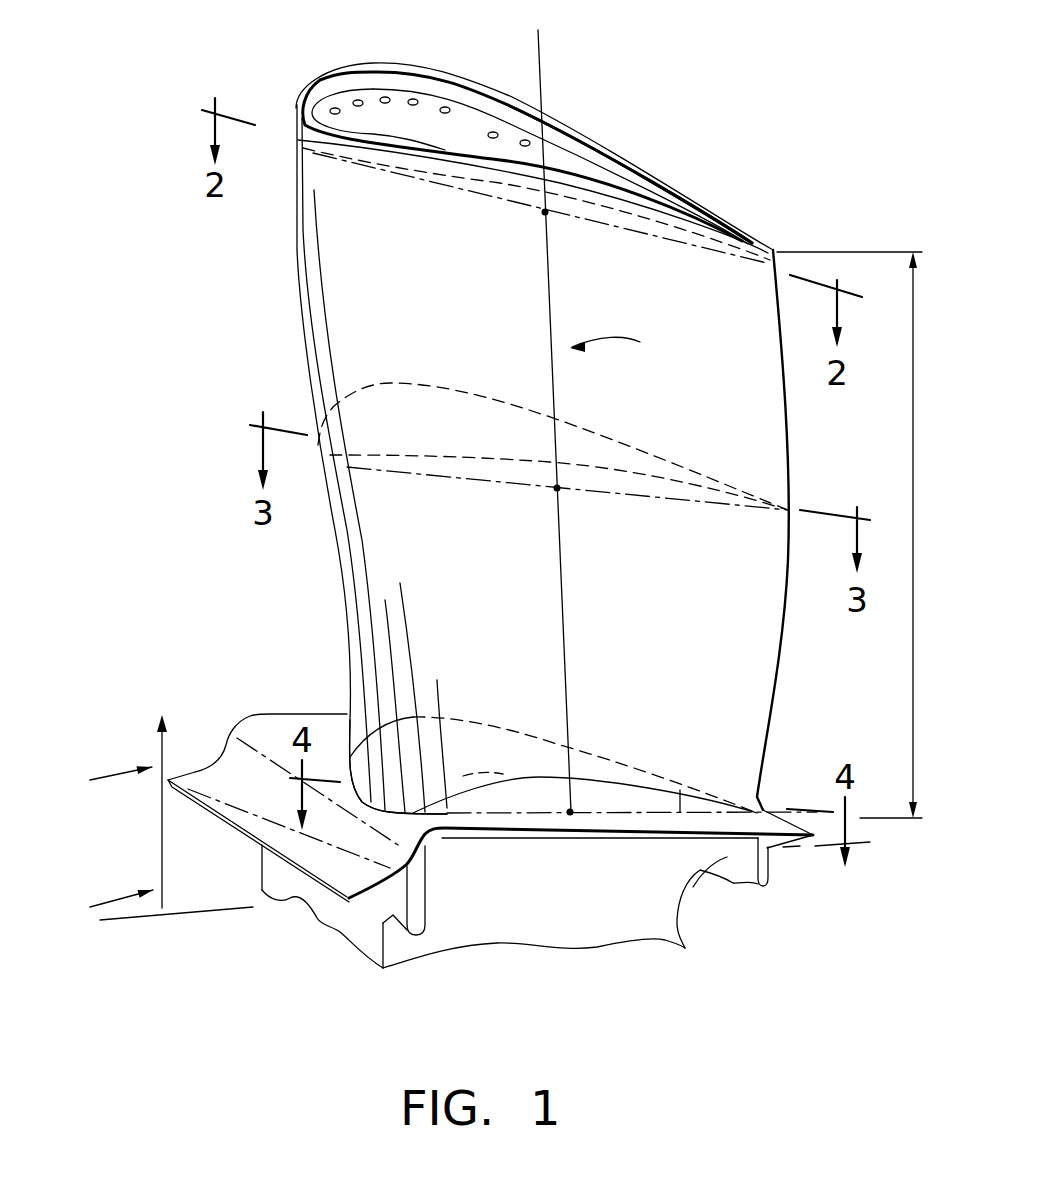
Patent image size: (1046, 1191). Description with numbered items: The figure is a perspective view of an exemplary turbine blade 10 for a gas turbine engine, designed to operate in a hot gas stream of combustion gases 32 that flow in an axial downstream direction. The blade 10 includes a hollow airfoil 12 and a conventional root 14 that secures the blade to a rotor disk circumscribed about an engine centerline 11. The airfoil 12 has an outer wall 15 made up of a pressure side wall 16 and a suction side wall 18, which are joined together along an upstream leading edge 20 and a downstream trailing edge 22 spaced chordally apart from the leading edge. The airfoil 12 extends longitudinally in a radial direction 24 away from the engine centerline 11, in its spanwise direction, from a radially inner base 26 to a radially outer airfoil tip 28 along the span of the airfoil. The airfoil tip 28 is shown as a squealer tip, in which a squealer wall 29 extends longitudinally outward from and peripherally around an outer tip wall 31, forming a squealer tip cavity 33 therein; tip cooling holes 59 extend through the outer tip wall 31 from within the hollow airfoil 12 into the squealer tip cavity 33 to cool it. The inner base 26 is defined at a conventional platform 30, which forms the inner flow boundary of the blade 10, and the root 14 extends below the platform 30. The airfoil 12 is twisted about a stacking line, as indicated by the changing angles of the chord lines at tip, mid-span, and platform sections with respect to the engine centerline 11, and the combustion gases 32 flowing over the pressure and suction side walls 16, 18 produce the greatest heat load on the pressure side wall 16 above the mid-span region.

The turbine blade 10 is at (395, 1017).
The engine centerline 11 is at (173, 910).
The hollow airfoil 12 is at (555, 459).
The root 14 is at (500, 912).
The outer wall 15 is at (372, 197).
The pressure side wall 16 is at (700, 423).
The suction side wall 18 is at (403, 103).
The leading edge 20 is at (297, 163).
The trailing edge 22 is at (788, 423).
The radial direction 24 is at (163, 820).
The radially inner base 26 is at (513, 780).
The airfoil tip 28 is at (310, 137).
The squealer wall 29 is at (353, 68).
The platform 30 is at (660, 817).
The outer tip wall 31 is at (587, 167).
The combustion gases 32 is at (98, 898).
The squealer tip cavity 33 is at (587, 147).
The tip cooling holes 59 is at (493, 132).